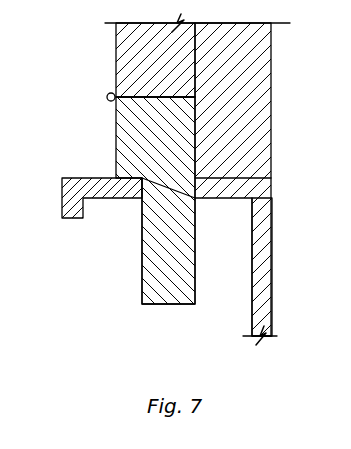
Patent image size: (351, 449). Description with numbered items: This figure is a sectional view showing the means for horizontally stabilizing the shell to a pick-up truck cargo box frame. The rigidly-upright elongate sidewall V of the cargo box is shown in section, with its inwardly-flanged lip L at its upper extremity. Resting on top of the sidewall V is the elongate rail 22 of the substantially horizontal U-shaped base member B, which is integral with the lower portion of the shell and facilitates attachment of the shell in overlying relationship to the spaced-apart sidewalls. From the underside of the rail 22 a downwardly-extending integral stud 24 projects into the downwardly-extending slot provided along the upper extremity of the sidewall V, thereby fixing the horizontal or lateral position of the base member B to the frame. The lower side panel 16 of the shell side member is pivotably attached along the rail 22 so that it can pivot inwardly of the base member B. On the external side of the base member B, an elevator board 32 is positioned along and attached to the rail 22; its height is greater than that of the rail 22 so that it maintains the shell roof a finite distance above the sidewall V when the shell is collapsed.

The lower side panel 16 is at (116, 58).
The elevator board 32 is at (272, 58).
The elongate rail 22 is at (116, 136).
The downwardly-extending integral stud 24 is at (142, 253).
The U-shaped base member B is at (116, 114).
The inwardly-flanged lip L is at (62, 193).
The upright sidewall V is at (272, 260).